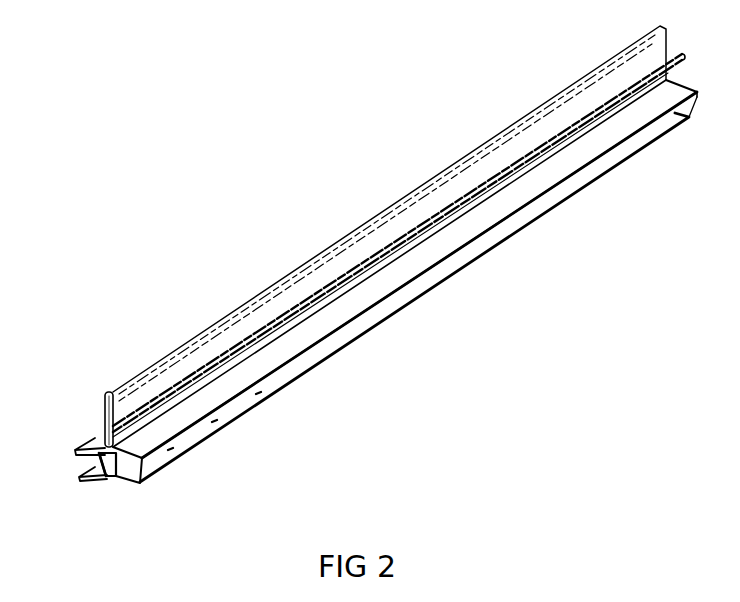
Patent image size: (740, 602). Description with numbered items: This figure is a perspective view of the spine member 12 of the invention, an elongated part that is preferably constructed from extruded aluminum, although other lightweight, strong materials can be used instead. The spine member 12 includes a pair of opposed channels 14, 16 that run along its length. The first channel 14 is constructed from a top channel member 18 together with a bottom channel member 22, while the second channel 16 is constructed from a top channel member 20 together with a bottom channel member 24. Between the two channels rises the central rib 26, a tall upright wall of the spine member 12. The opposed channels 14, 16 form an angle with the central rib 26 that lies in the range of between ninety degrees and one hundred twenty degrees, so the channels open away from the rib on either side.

The spine member 12 is at (141, 330).
The channel 14 is at (70, 466).
The channel 16 is at (122, 470).
The top channel member 18 is at (92, 447).
The top channel member 20 is at (152, 442).
The bottom channel member 22 is at (97, 477).
The bottom channel member 24 is at (237, 422).
The central rib 26 is at (108, 393).